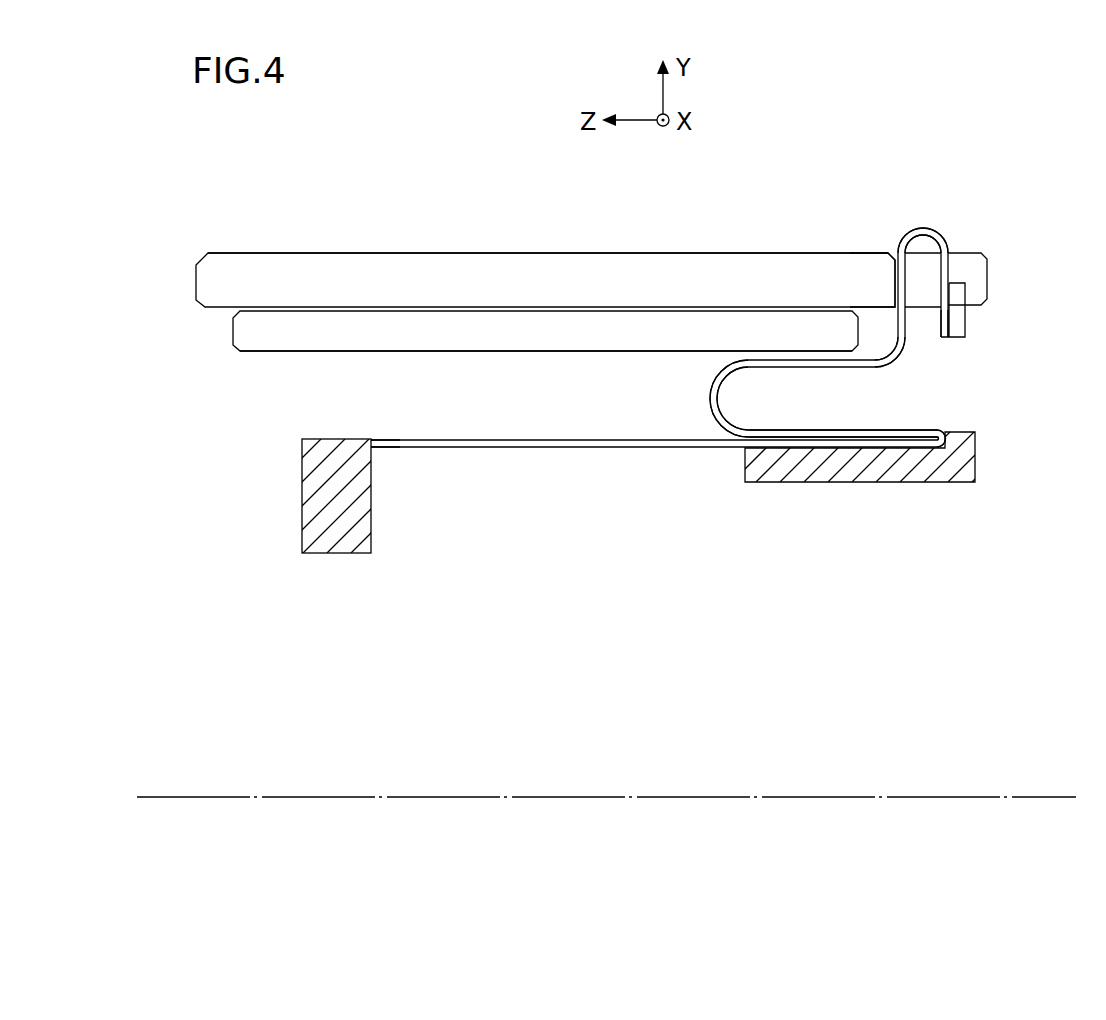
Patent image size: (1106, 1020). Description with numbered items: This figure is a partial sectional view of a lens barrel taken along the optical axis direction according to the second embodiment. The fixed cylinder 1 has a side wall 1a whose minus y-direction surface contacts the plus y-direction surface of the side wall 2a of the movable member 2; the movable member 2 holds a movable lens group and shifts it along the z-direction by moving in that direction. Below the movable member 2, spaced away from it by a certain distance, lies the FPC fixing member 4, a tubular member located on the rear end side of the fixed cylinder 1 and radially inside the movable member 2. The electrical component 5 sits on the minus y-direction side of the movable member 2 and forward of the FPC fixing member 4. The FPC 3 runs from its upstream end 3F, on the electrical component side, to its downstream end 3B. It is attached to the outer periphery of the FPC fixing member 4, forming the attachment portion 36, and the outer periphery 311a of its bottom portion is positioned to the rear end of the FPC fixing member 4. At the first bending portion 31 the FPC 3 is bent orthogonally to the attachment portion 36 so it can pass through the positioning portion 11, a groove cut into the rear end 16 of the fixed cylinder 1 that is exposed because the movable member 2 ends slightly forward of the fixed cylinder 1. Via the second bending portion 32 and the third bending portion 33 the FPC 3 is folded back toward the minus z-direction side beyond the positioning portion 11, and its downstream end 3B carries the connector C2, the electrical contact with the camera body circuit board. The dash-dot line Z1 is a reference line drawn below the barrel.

The fixed cylinder 1 is at (481, 253).
The side wall of fixed cylinder 1a is at (548, 265).
The positioning portion 11 is at (877, 253).
The rear end of fixed cylinder 16 is at (988, 278).
The connector C2 is at (960, 317).
The movable member 2 is at (622, 334).
The side wall of movable member 2a is at (514, 352).
The FPC 3 is at (797, 360).
The upstream end of FPC 3F is at (372, 439).
The downstream end of FPC 3B is at (948, 338).
The first bending portion 31 is at (713, 395).
The second bending portion 32 is at (896, 366).
The third bending portion 33 is at (924, 227).
The attachment portion 36 is at (938, 425).
The outer periphery of bottom portion 311a is at (946, 431).
The FPC fixing member 4 is at (833, 483).
The electrical component 5 is at (302, 490).
The reference line Z1 is at (712, 798).